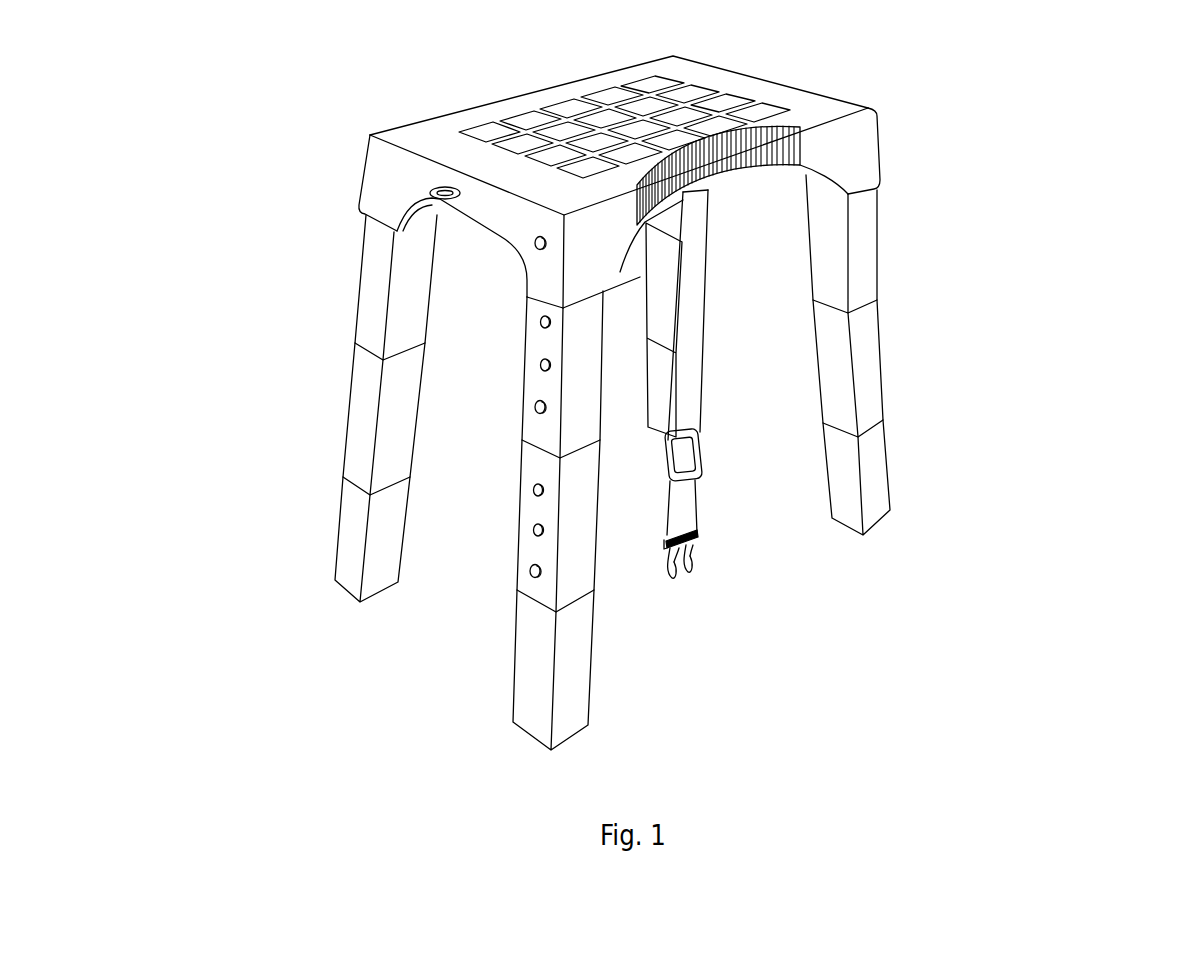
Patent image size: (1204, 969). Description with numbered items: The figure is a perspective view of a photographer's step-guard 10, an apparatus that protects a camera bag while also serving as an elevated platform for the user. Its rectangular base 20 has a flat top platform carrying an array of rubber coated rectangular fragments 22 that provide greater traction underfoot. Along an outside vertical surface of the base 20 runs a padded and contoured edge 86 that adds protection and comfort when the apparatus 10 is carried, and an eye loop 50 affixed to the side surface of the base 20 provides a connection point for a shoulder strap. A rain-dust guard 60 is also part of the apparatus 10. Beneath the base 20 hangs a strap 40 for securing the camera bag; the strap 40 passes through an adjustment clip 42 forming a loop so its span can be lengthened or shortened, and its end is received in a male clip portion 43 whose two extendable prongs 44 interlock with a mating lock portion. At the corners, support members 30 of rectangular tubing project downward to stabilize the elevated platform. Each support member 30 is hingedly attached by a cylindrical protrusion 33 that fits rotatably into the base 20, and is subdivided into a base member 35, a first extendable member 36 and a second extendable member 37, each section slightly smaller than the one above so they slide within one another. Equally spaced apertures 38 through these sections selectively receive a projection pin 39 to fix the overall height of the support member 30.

The photographer's step-guard 10 is at (1050, 115).
The base 20 is at (857, 160).
The rubber coated rectangular fragments 22 is at (700, 103).
The support member 30 is at (589, 491).
The cylindrical protrusion 33 is at (538, 249).
The base member 35 is at (365, 322).
The first extendable member 36 is at (355, 432).
The second extendable member 37 is at (345, 572).
The apertures 38 is at (541, 368).
The projection pin 39 is at (537, 411).
The strap 40 is at (693, 298).
The adjustment clip 42 is at (692, 458).
The male clip portion 43 is at (695, 556).
The extendable prongs 44 is at (696, 566).
The eye loop 50 is at (430, 192).
The rain-dust guard 60 is at (712, 192).
The padded and contoured edge 86 is at (740, 182).